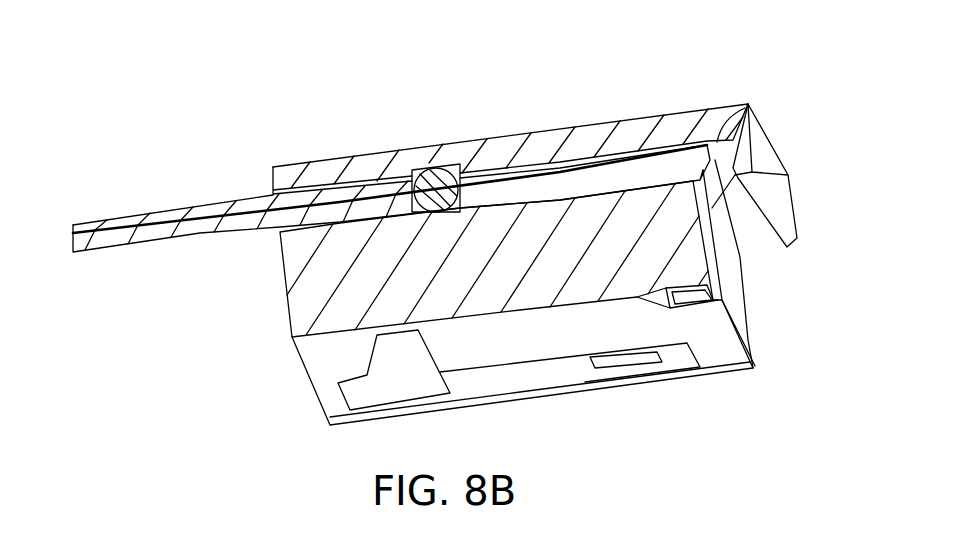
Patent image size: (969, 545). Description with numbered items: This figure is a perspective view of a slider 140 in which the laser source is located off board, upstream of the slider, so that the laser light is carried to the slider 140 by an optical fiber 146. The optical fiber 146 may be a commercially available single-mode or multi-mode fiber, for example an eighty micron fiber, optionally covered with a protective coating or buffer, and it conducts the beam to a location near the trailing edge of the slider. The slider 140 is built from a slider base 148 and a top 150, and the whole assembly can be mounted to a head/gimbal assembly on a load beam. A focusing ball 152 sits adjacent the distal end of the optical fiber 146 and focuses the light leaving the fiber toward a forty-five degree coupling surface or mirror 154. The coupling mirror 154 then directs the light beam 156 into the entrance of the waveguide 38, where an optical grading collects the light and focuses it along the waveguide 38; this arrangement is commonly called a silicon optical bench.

The waveguide 38 is at (708, 266).
The slider 140 is at (443, 82).
The optical fiber 146 is at (84, 222).
The slider base 148 is at (305, 326).
The top 150 is at (293, 172).
The focusing ball 152 is at (433, 172).
The coupling mirror 154 is at (748, 108).
The light beam 156 is at (588, 167).